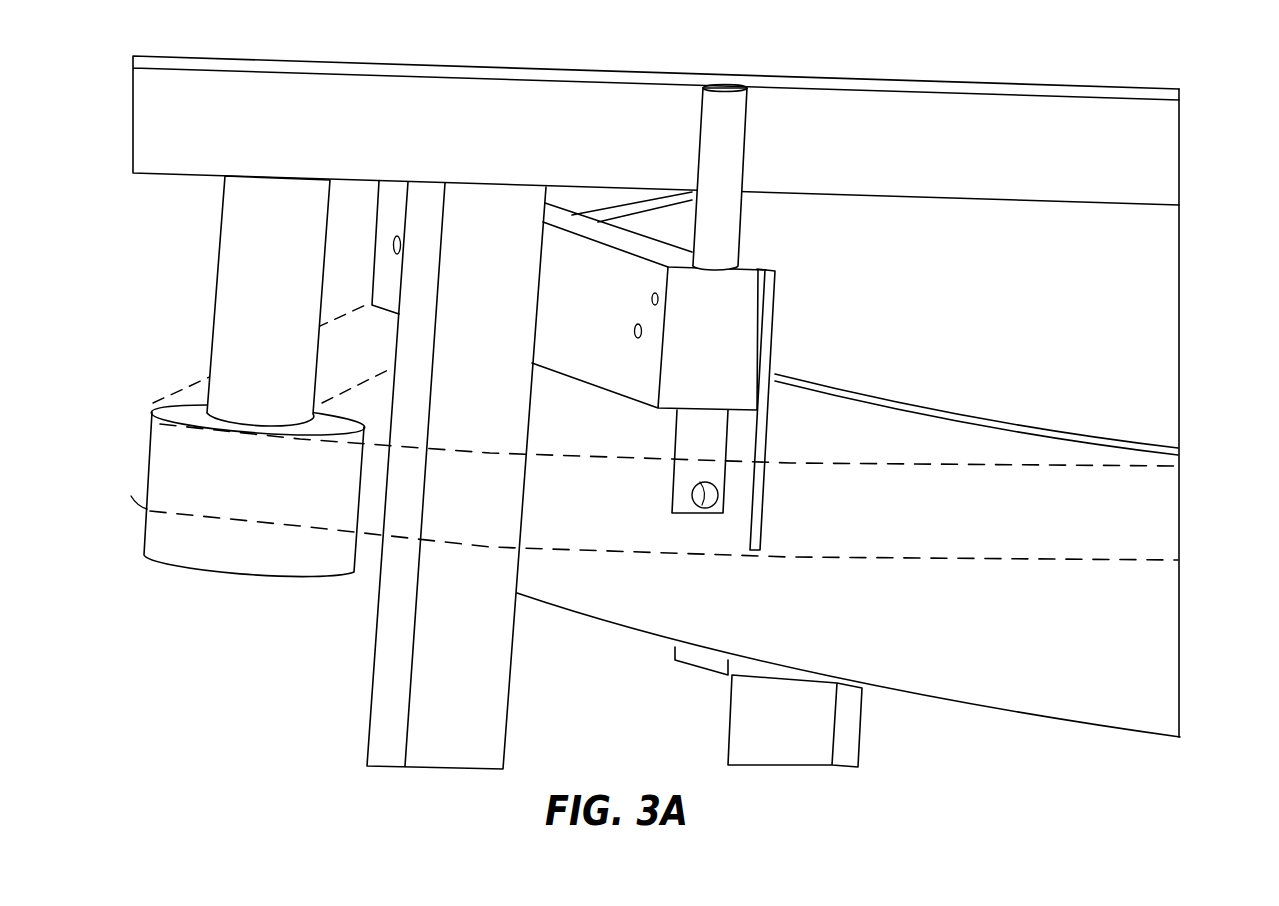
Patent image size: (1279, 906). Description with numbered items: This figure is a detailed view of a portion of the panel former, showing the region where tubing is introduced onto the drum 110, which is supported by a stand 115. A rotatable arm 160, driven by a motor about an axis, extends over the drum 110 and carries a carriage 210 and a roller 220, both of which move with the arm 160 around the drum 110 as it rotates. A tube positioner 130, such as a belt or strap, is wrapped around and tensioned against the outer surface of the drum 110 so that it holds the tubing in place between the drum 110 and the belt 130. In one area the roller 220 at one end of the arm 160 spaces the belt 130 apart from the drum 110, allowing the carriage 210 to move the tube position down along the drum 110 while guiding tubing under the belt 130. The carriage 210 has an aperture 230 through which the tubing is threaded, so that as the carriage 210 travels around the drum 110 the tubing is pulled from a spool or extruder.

The drum 110 is at (1085, 682).
The stand 115 is at (800, 737).
The tube positioner 130 is at (1085, 562).
The arm 160 is at (163, 100).
The carriage 210 is at (609, 465).
The roller 220 is at (197, 528).
The aperture 230 is at (703, 500).